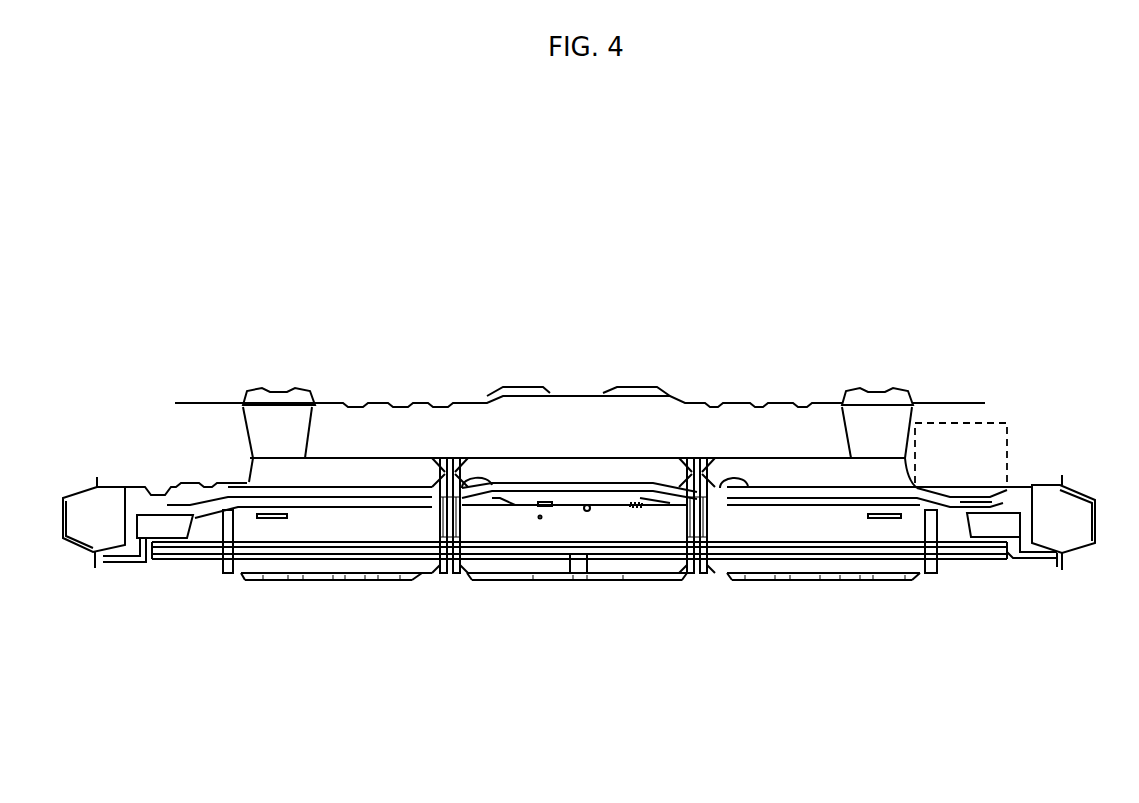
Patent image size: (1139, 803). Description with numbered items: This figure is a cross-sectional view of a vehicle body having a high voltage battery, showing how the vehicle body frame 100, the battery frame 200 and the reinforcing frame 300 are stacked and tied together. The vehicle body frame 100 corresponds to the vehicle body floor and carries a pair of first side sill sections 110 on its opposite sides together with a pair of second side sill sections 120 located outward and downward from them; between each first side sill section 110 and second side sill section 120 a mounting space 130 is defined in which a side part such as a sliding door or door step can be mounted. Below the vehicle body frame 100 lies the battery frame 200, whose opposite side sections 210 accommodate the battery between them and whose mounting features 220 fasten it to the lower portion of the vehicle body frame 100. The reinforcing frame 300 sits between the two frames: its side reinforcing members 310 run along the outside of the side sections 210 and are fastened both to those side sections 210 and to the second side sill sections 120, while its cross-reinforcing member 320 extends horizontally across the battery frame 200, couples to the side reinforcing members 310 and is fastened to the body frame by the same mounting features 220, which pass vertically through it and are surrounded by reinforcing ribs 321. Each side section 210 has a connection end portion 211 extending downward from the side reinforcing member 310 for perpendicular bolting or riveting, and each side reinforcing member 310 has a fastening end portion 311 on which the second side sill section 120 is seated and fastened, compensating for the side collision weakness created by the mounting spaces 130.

The vehicle body frame 100 is at (374, 396).
The first side sill section 110 is at (877, 425).
The second side sill section 120 is at (1073, 530).
The mounting space 130 is at (1008, 425).
The battery frame 200 is at (658, 590).
The side section 210 is at (932, 547).
The connection end portion 211 is at (997, 560).
The mounting feature 220 is at (745, 482).
The reinforcing frame 300 is at (618, 476).
The side reinforcing member 310 is at (180, 530).
The fastening end portion 311 is at (130, 562).
The cross-reinforcing member 320 is at (545, 480).
The reinforcing rib 321 is at (490, 490).